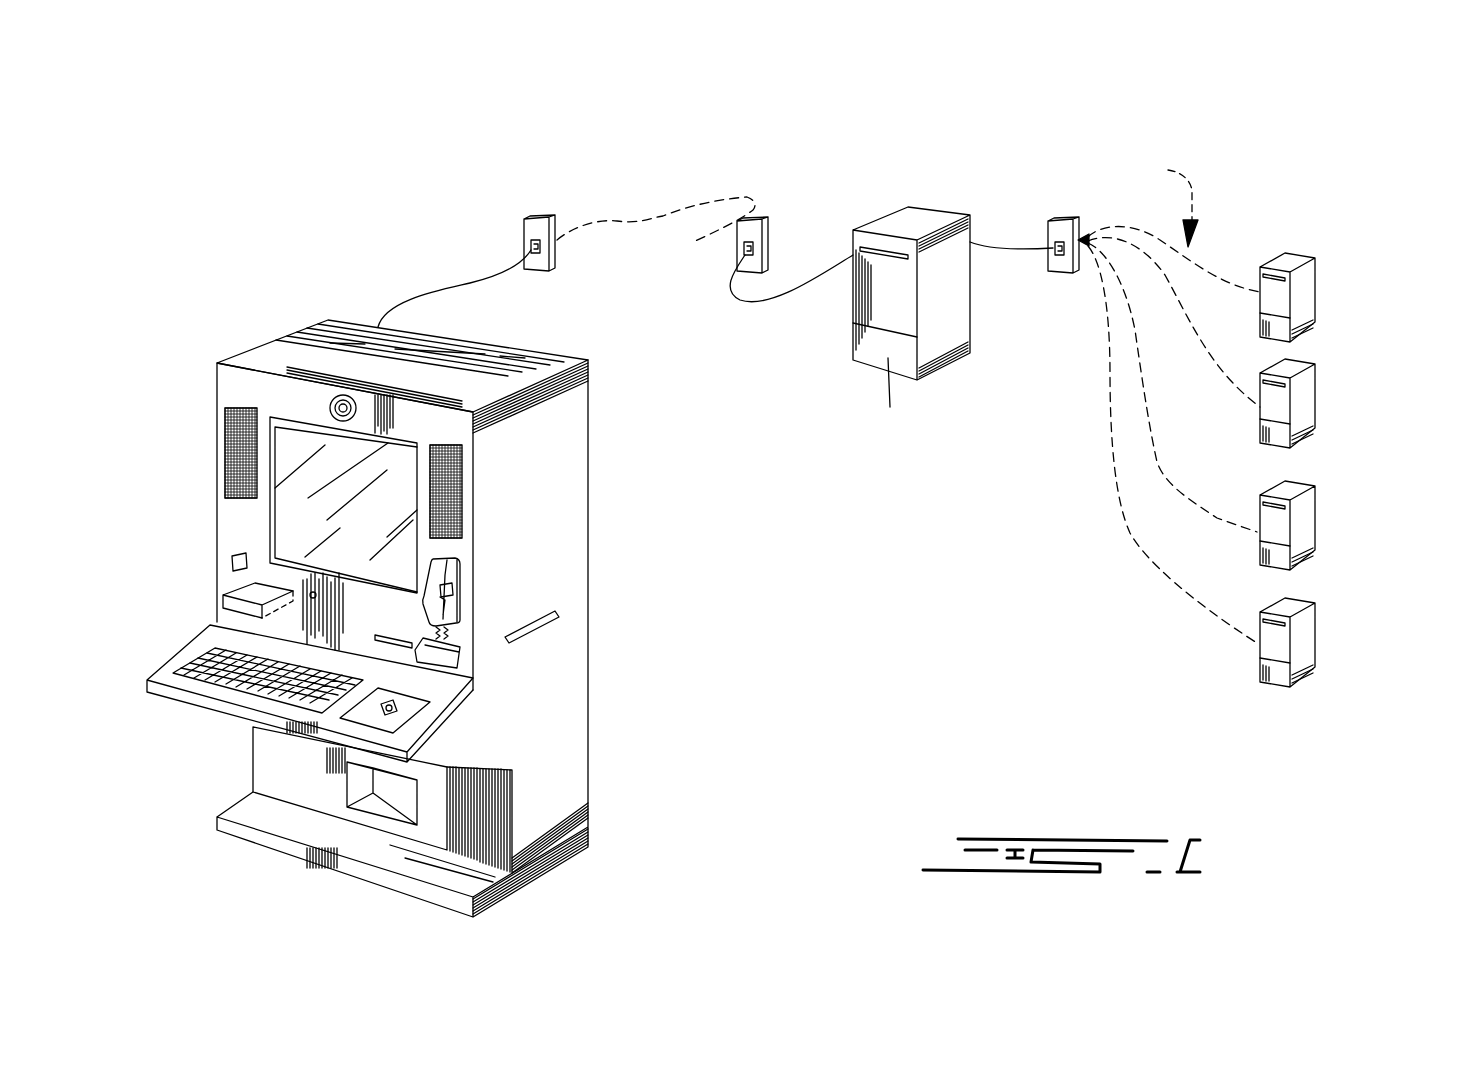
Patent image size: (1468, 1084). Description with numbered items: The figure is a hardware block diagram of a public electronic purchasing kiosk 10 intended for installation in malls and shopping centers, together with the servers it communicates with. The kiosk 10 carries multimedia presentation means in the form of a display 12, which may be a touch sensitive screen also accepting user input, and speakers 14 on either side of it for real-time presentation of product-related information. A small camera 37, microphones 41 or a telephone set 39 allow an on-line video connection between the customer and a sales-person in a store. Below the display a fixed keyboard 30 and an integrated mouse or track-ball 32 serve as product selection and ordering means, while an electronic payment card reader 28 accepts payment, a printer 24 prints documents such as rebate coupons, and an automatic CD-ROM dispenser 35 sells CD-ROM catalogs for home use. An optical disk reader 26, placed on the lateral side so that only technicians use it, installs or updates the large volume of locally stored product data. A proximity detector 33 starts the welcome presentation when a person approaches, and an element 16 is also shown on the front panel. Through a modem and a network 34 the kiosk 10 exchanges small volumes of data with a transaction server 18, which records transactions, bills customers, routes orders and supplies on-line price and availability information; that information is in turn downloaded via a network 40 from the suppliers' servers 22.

The electronic purchasing kiosk 10 is at (263, 343).
The display 12 is at (270, 516).
The speaker 14 is at (237, 450).
The cash acceptor 16 is at (238, 594).
The transaction server 18 is at (923, 223).
The suppliers' servers 22 is at (1287, 263).
The printer 24 is at (458, 648).
The optical disk reader 26 is at (560, 612).
The electronic payment card reader 28 is at (393, 637).
The fixed keyboard 30 is at (210, 642).
The integrated mouse or track-ball 32 is at (407, 697).
The proximity detector 33 is at (316, 595).
The network 34 is at (665, 212).
The automatic CD-ROM dispenser 35 is at (380, 784).
The camera 37 is at (357, 406).
The telephone set 39 is at (442, 593).
The network 40 is at (1213, 373).
The microphone 41 is at (233, 558).